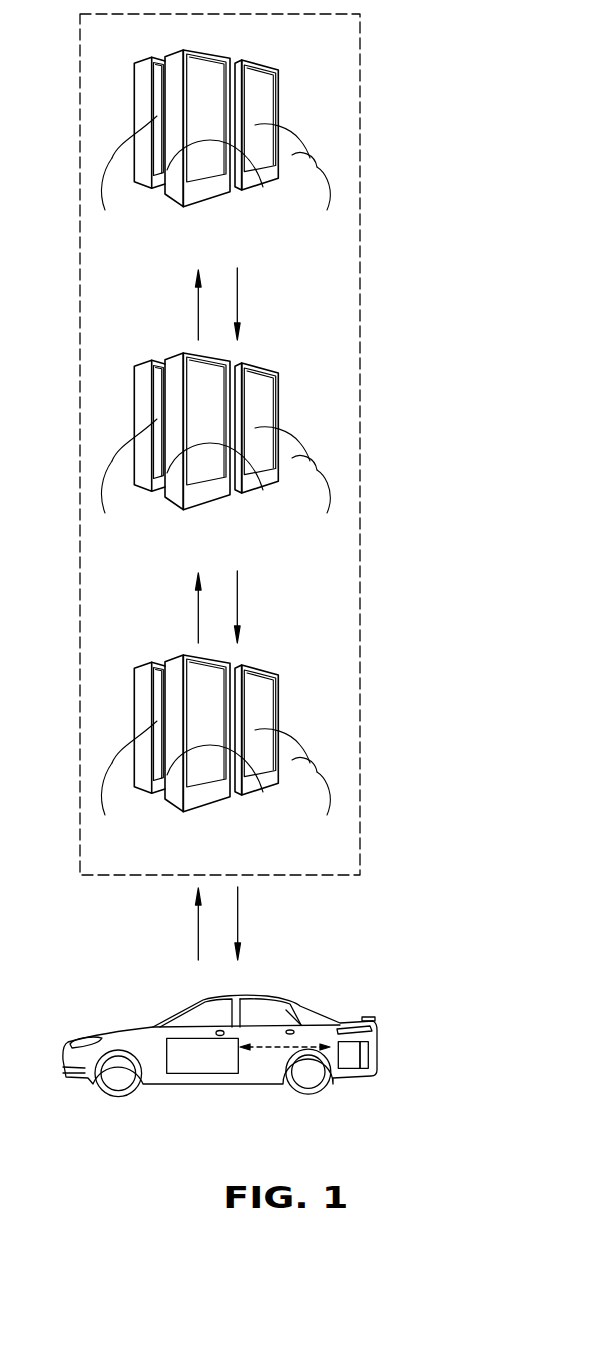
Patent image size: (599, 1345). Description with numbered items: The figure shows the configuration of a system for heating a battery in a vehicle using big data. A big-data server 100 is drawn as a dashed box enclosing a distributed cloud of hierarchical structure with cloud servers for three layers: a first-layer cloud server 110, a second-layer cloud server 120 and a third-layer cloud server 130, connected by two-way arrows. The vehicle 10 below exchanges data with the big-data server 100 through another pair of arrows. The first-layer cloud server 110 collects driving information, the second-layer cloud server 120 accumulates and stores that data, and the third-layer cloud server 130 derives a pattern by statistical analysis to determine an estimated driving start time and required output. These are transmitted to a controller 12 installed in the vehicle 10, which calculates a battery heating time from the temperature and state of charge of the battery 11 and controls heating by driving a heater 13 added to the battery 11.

The big-data server 100 is at (360, 37).
The third-layer cloud server 130 is at (263, 95).
The second-layer cloud server 120 is at (267, 390).
The first-layer cloud server 110 is at (267, 693).
The vehicle 10 is at (282, 998).
The battery 11 is at (348, 1062).
The controller 12 is at (185, 1073).
The heater 13 is at (367, 1057).